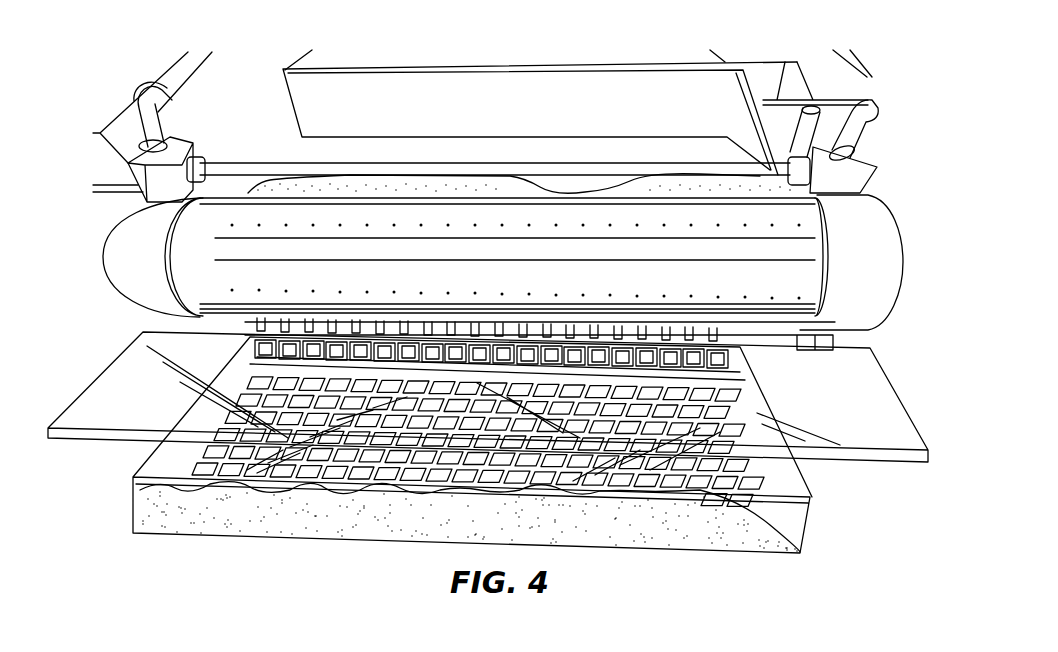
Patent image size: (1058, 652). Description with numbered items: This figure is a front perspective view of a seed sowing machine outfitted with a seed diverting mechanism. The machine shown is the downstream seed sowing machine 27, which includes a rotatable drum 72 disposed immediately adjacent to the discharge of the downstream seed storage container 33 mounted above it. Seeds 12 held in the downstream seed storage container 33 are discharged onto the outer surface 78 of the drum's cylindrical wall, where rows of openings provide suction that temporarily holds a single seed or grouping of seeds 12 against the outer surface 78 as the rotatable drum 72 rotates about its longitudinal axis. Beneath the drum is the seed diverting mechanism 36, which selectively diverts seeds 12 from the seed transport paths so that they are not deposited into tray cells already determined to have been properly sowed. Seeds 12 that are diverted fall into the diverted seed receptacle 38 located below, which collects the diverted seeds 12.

The seeds 12 is at (318, 188).
The downstream seed sowing machine 27 is at (902, 258).
The downstream seed storage container 33 is at (414, 87).
The seed diverting mechanism 36 is at (766, 338).
The diverted seed receptacle 38 is at (125, 471).
The rotatable drum 72 is at (838, 287).
The outer surface 78 is at (805, 227).